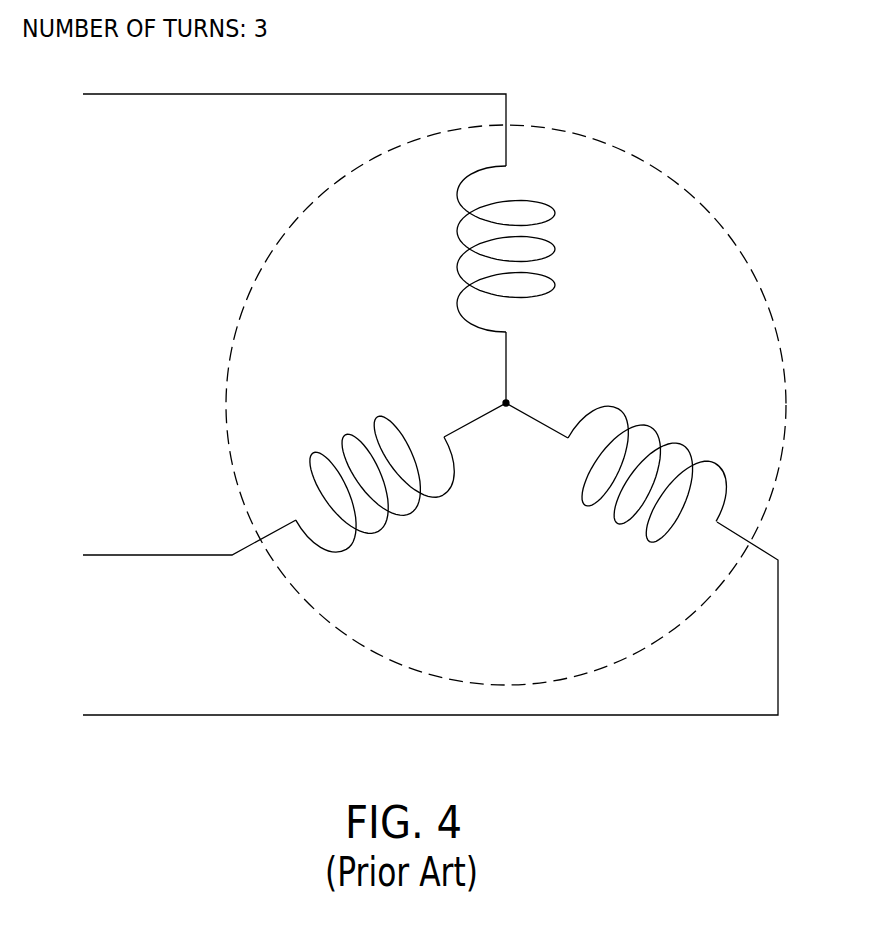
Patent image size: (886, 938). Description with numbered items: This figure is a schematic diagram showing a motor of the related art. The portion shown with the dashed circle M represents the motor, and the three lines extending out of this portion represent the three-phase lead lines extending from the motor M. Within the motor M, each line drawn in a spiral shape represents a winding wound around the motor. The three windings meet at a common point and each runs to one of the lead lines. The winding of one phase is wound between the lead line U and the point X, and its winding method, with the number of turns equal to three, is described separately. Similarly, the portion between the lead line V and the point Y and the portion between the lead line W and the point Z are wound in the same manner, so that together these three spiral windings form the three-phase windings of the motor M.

The lead line terminal of one phase U is at (52, 73).
The lead line terminal of second phase V is at (52, 535).
The lead line terminal of third phase W is at (57, 695).
The motor M is at (252, 277).
The winding end of one phase X is at (529, 362).
The winding end of second phase Y is at (452, 420).
The winding end of third phase Z is at (551, 470).